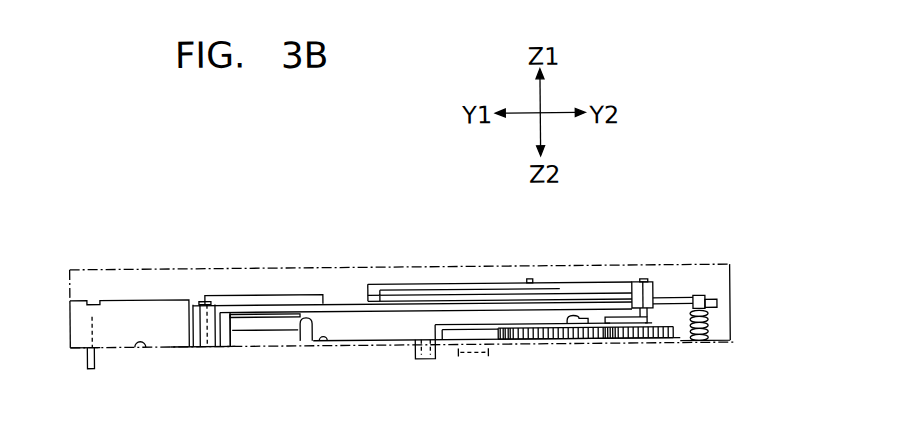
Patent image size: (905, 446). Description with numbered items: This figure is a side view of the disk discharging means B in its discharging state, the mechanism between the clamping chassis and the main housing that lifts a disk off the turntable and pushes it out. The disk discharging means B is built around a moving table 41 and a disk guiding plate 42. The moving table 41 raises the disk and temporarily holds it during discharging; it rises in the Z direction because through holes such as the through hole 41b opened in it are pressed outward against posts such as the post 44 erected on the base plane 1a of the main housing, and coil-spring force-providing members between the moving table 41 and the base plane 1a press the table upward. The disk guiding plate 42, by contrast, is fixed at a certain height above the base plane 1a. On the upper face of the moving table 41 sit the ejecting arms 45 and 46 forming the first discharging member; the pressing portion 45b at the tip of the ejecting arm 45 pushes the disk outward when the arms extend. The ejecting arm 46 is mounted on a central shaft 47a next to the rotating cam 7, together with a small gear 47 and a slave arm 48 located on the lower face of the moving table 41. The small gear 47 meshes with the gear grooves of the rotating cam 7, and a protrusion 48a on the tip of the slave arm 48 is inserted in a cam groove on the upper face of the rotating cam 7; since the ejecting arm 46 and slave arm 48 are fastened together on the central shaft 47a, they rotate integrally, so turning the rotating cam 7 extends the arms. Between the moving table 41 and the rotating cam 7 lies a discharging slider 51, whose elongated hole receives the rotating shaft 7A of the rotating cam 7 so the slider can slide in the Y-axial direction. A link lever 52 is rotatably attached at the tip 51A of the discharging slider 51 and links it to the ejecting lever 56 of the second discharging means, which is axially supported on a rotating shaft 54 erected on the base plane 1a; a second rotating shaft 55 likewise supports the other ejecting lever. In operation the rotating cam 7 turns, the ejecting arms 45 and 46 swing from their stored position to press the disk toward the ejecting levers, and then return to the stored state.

The base plane 1a is at (139, 348).
The rotating cam 7 is at (536, 344).
The rotating shaft 7A is at (571, 343).
The moving table 41 is at (509, 305).
The through hole 41b is at (718, 310).
The disk guiding plate 42 is at (246, 294).
The post 44 is at (700, 298).
The ejecting arm 45 is at (432, 283).
The pressing portion 45b is at (368, 287).
The ejecting arm 46 is at (487, 295).
The small gear 47 is at (643, 341).
The central shaft 47a is at (648, 325).
The slave arm 48 is at (612, 284).
The protrusion 48a is at (610, 346).
The discharging slider 51 is at (447, 331).
The tip of discharging slider 51A is at (327, 344).
The link lever 52 is at (268, 330).
The rotating shaft 54 is at (205, 299).
The rotating shaft 55 is at (710, 330).
The ejecting lever 56 is at (290, 303).
The disk discharging means B is at (398, 260).